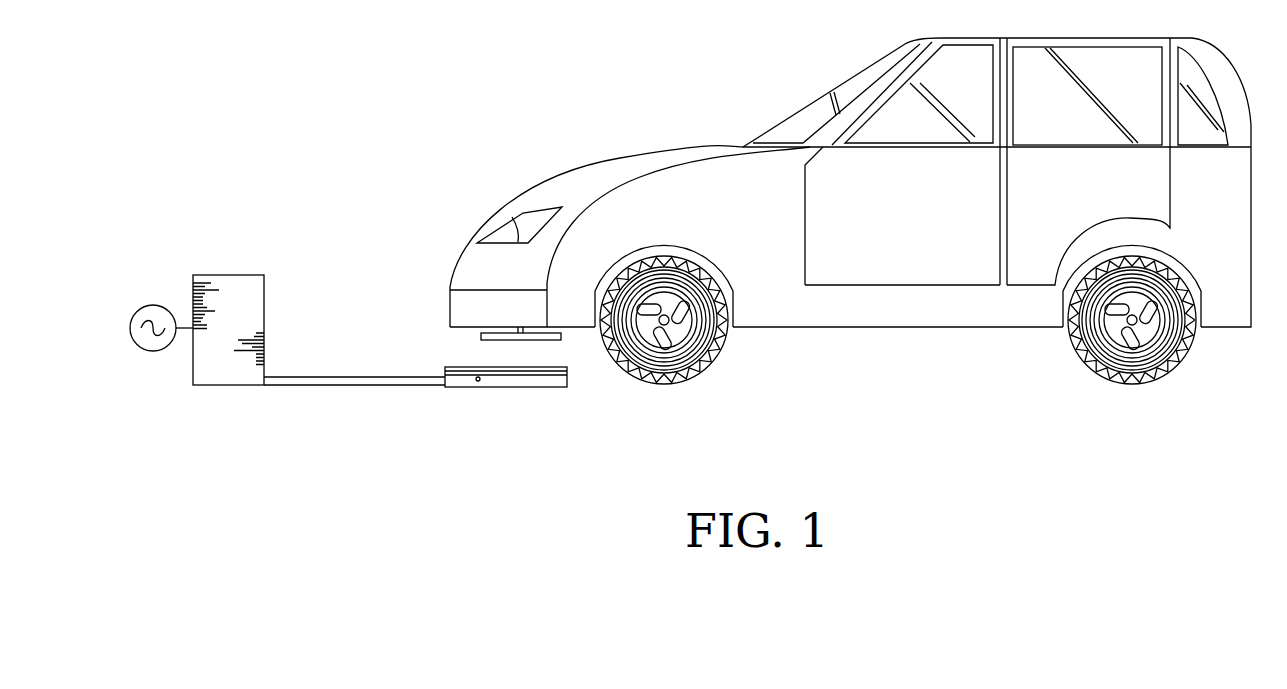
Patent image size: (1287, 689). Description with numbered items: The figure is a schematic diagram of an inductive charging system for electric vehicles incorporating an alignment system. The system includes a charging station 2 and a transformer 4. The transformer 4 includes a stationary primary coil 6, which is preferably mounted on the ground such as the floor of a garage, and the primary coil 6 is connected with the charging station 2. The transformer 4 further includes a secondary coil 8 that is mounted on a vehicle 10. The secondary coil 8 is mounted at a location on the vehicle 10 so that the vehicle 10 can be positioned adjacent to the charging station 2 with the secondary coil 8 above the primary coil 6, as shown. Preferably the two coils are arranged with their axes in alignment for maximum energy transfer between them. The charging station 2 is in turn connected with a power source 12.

The charging station 2 is at (229, 365).
The transformer 4 is at (574, 362).
The primary coil 6 is at (507, 376).
The secondary coil 8 is at (481, 338).
The vehicle 10 is at (673, 185).
The power source 12 is at (153, 305).